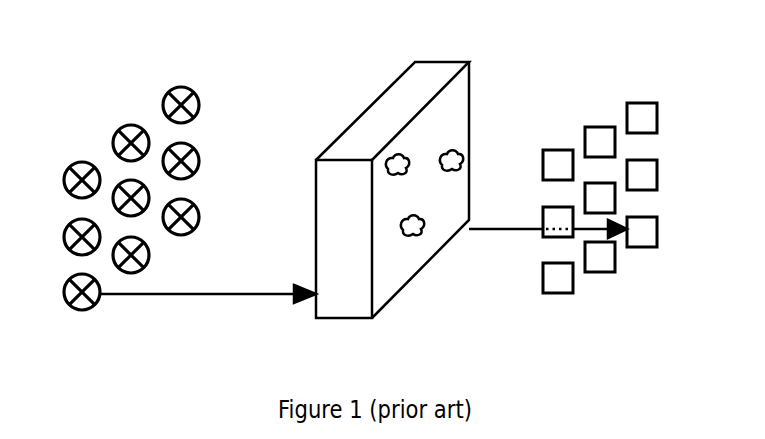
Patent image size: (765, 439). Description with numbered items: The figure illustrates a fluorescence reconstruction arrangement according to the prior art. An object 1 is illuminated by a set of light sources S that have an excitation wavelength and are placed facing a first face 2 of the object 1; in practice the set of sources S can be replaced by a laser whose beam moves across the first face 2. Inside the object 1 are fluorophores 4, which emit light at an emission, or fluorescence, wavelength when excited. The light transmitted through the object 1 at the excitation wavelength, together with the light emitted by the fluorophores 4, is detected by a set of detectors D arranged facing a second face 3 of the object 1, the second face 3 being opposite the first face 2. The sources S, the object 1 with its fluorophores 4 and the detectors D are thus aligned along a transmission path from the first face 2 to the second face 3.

The object 1 is at (392, 201).
The first face 2 is at (312, 310).
The second face 3 is at (468, 80).
The fluorophores 4 is at (390, 163).
The light sources S is at (72, 307).
The detectors D is at (658, 233).